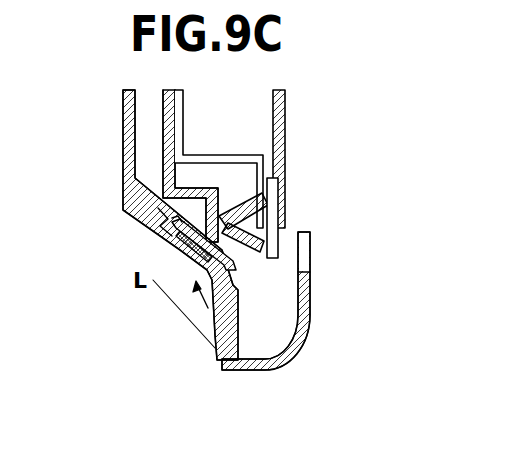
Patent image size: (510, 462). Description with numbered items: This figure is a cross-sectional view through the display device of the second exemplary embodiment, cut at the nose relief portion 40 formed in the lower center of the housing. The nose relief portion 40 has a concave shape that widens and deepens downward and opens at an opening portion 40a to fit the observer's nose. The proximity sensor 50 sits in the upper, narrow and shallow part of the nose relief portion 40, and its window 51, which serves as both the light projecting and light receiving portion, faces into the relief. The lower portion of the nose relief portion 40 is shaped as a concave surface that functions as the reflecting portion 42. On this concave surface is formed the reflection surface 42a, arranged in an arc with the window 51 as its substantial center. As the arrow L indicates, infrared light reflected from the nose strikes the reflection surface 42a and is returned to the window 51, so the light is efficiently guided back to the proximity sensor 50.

The nose relief portion 40 is at (130, 215).
The opening portion 40a is at (220, 368).
The reflecting portion 42 is at (237, 330).
The reflection surface 42a is at (213, 350).
The proximity sensor 50 is at (127, 190).
The window 51 is at (182, 257).